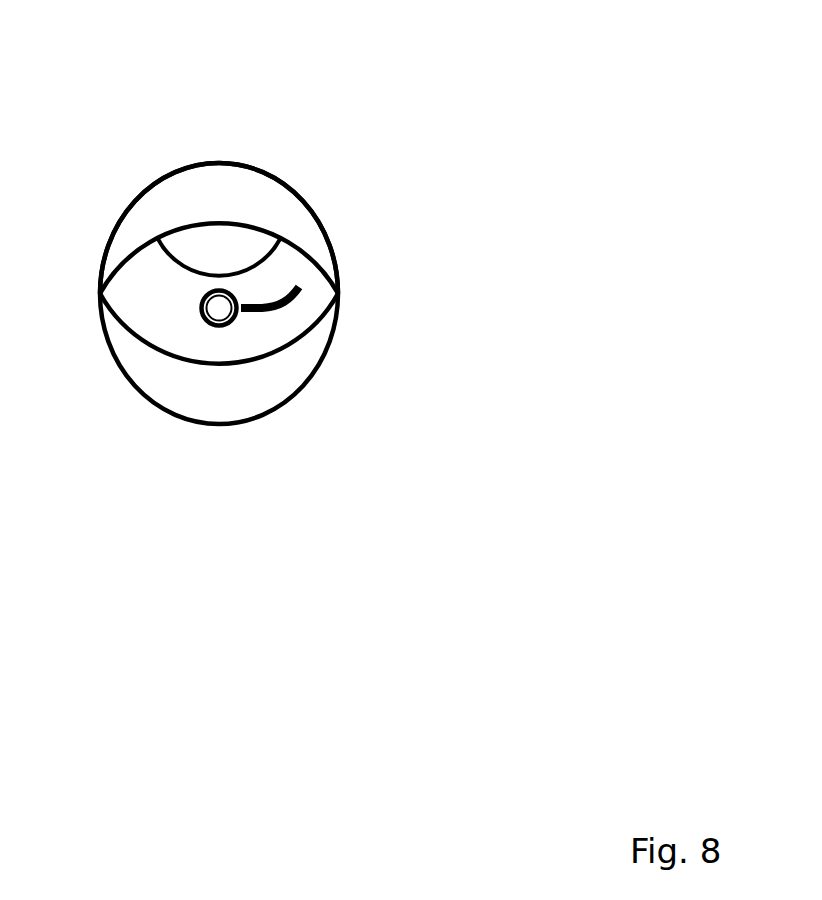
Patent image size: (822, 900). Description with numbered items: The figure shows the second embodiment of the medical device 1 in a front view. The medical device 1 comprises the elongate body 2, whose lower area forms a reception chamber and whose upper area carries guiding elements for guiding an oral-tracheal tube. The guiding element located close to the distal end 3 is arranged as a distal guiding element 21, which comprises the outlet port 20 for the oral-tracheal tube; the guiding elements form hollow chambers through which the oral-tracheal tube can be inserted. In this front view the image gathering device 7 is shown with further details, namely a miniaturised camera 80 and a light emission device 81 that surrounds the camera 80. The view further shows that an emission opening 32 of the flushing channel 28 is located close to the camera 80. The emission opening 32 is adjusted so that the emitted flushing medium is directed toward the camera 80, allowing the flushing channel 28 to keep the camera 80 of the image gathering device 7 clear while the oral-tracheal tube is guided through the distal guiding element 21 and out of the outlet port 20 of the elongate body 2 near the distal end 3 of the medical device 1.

The medical device 1 is at (95, 83).
The elongate body 2 is at (325, 233).
The distal end 3 is at (107, 352).
The image gathering device 7 is at (183, 294).
The outlet port 20 is at (226, 240).
The distal guiding element 21 is at (217, 173).
The flushing channel 28 is at (287, 305).
The emission opening 32 is at (241, 314).
The miniaturised camera 80 is at (219, 309).
The light emission device 81 is at (205, 322).